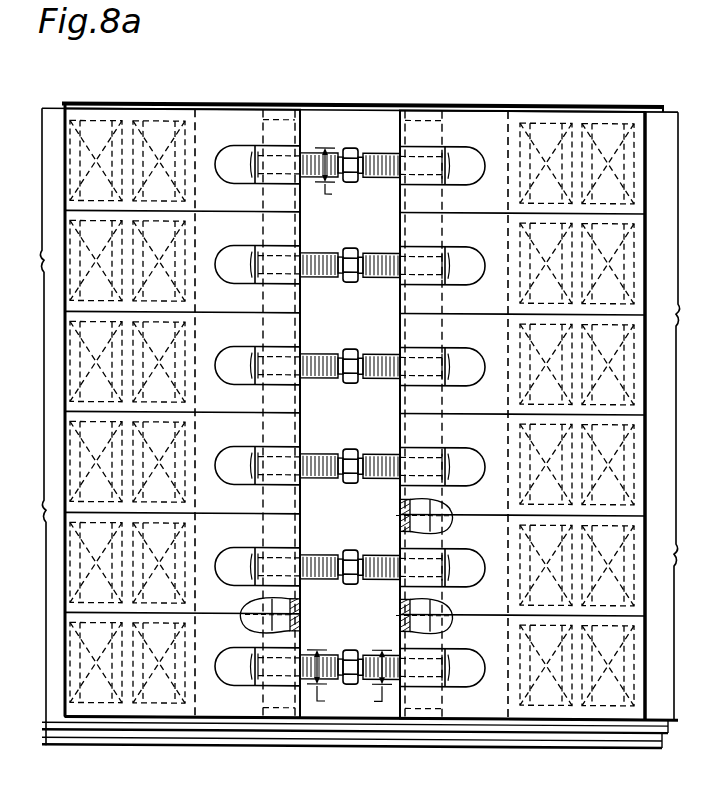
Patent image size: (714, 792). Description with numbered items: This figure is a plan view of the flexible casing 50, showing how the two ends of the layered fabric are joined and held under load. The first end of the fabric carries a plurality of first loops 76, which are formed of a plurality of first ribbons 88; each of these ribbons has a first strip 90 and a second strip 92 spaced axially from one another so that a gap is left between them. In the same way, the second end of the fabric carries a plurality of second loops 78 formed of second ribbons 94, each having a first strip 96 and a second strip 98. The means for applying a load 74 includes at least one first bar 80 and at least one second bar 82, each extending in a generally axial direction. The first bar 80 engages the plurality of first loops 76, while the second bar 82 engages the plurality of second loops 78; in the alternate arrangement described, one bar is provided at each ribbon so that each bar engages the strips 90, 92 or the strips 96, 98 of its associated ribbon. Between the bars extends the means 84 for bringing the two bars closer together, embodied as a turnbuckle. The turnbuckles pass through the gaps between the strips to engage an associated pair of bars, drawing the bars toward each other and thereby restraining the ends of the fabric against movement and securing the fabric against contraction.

The flexible casing 50 is at (670, 124).
The means for applying a load 74 is at (352, 147).
The first loops 76 is at (222, 116).
The second loops 78 is at (497, 124).
The first bar 80 is at (305, 205).
The second bar 82 is at (400, 205).
The means for bringing the two bars closer together 84 is at (328, 647).
The first ribbons 88 is at (229, 206).
The first strip 90 is at (250, 118).
The second strip 92 is at (258, 196).
The second ribbons 94 is at (501, 204).
The first strip 96 is at (450, 124).
The second strip 98 is at (450, 200).